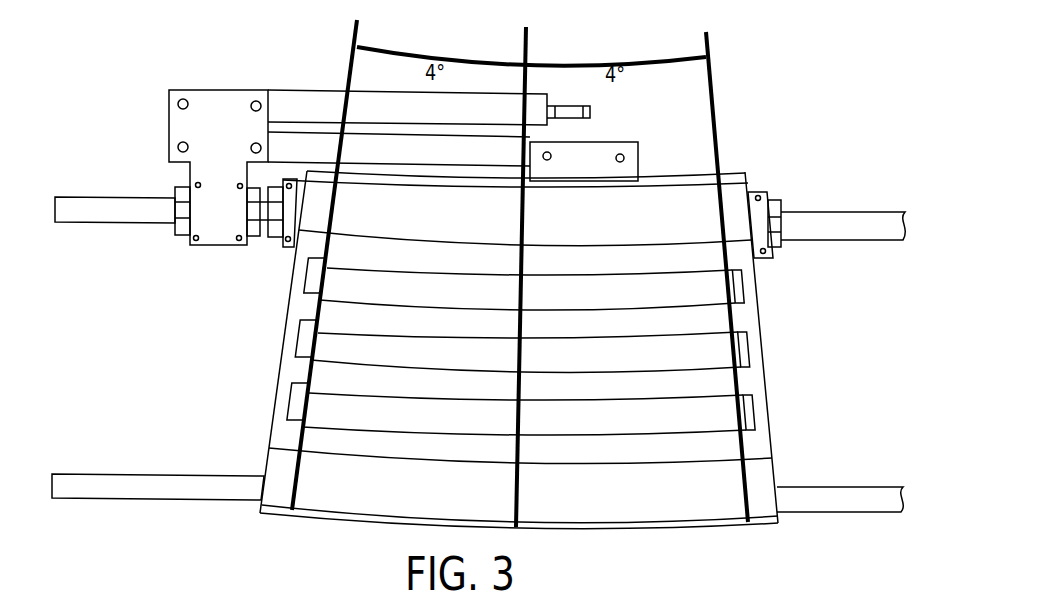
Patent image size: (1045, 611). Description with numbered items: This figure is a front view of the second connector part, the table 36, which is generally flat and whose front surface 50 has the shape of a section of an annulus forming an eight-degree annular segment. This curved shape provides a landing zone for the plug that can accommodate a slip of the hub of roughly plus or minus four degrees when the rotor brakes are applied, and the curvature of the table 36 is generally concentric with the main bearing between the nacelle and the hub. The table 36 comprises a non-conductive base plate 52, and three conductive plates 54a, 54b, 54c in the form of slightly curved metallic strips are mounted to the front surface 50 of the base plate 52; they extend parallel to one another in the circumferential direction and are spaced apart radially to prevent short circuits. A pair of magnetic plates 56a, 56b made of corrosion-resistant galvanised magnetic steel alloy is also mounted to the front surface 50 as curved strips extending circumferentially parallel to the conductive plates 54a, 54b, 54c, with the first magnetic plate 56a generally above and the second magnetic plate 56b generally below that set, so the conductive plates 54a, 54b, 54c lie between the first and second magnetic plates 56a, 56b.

The table 36 is at (488, 297).
The front surface 50 is at (290, 368).
The non-conductive base plate 52 is at (758, 443).
The conductive plate 54a is at (742, 287).
The conductive plate 54b is at (745, 350).
The conductive plate 54c is at (748, 413).
The first magnetic plate 56a is at (732, 192).
The second magnetic plate 56b is at (706, 508).